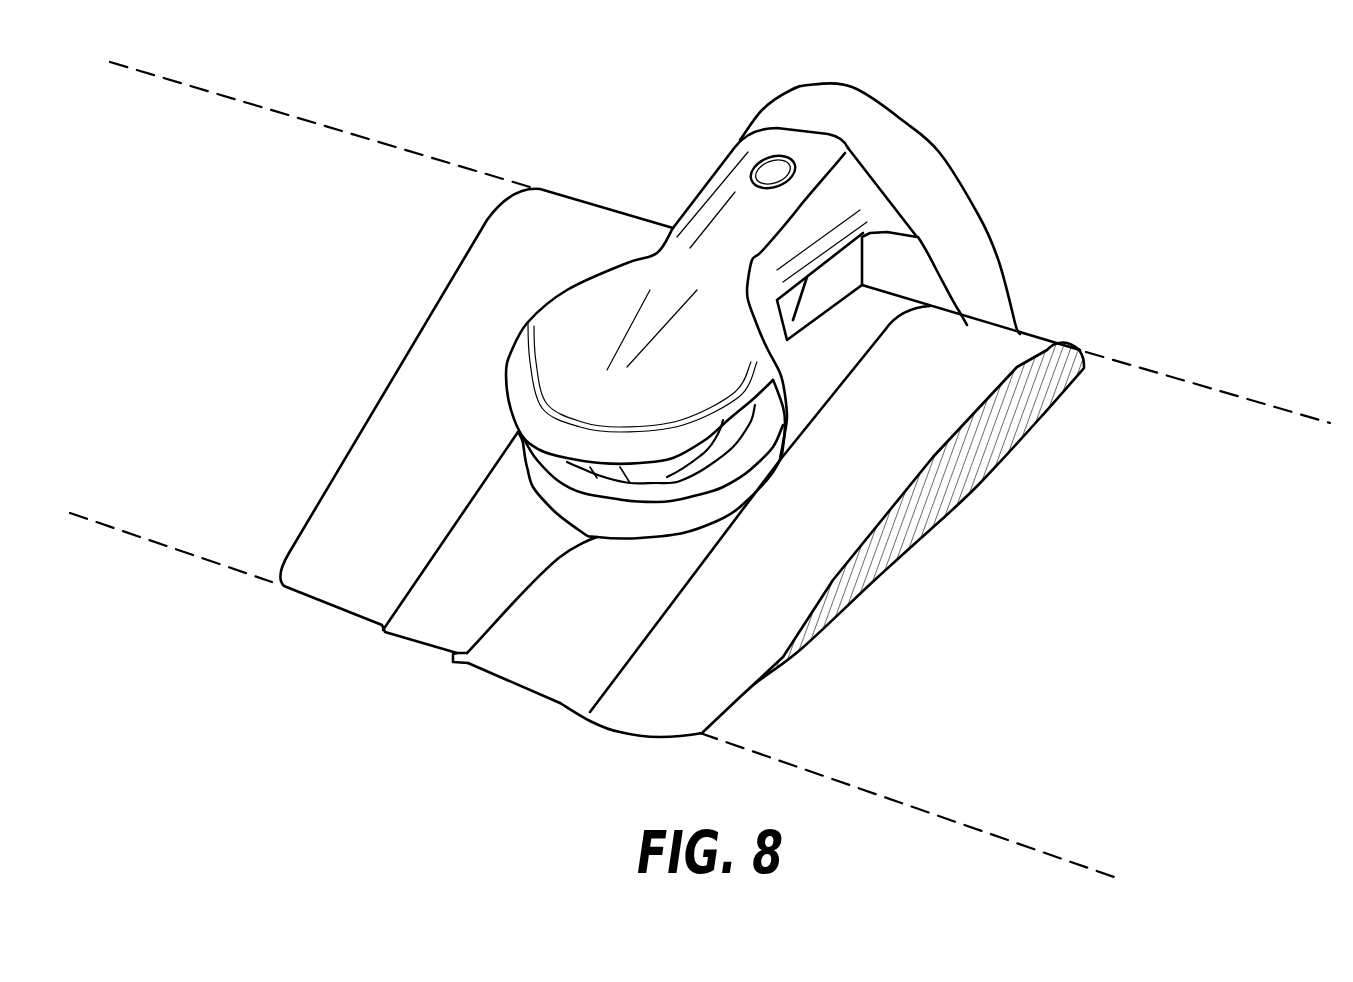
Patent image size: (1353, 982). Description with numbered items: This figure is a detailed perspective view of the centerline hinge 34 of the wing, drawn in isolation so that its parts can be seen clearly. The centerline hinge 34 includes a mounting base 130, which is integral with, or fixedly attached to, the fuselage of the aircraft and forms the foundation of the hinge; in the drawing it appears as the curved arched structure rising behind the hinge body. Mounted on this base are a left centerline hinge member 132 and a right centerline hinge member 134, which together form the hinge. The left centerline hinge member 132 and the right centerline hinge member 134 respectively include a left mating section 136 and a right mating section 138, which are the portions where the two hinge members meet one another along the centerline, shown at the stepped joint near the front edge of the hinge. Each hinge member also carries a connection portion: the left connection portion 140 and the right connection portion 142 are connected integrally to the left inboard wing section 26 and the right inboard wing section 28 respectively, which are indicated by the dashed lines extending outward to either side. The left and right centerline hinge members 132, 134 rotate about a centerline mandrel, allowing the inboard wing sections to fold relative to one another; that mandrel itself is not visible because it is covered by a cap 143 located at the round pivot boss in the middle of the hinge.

The left inboard wing section 26 is at (330, 128).
The right inboard wing section 28 is at (1213, 388).
The centerline hinge 34 is at (905, 66).
The mounting base 130 is at (983, 228).
The left centerline hinge member 132 is at (283, 605).
The right centerline hinge member 134 is at (541, 727).
The left mating section 136 is at (433, 650).
The right mating section 138 is at (467, 668).
The left connection portion 140 is at (553, 198).
The right connection portion 142 is at (1045, 325).
The cap 143 is at (583, 335).